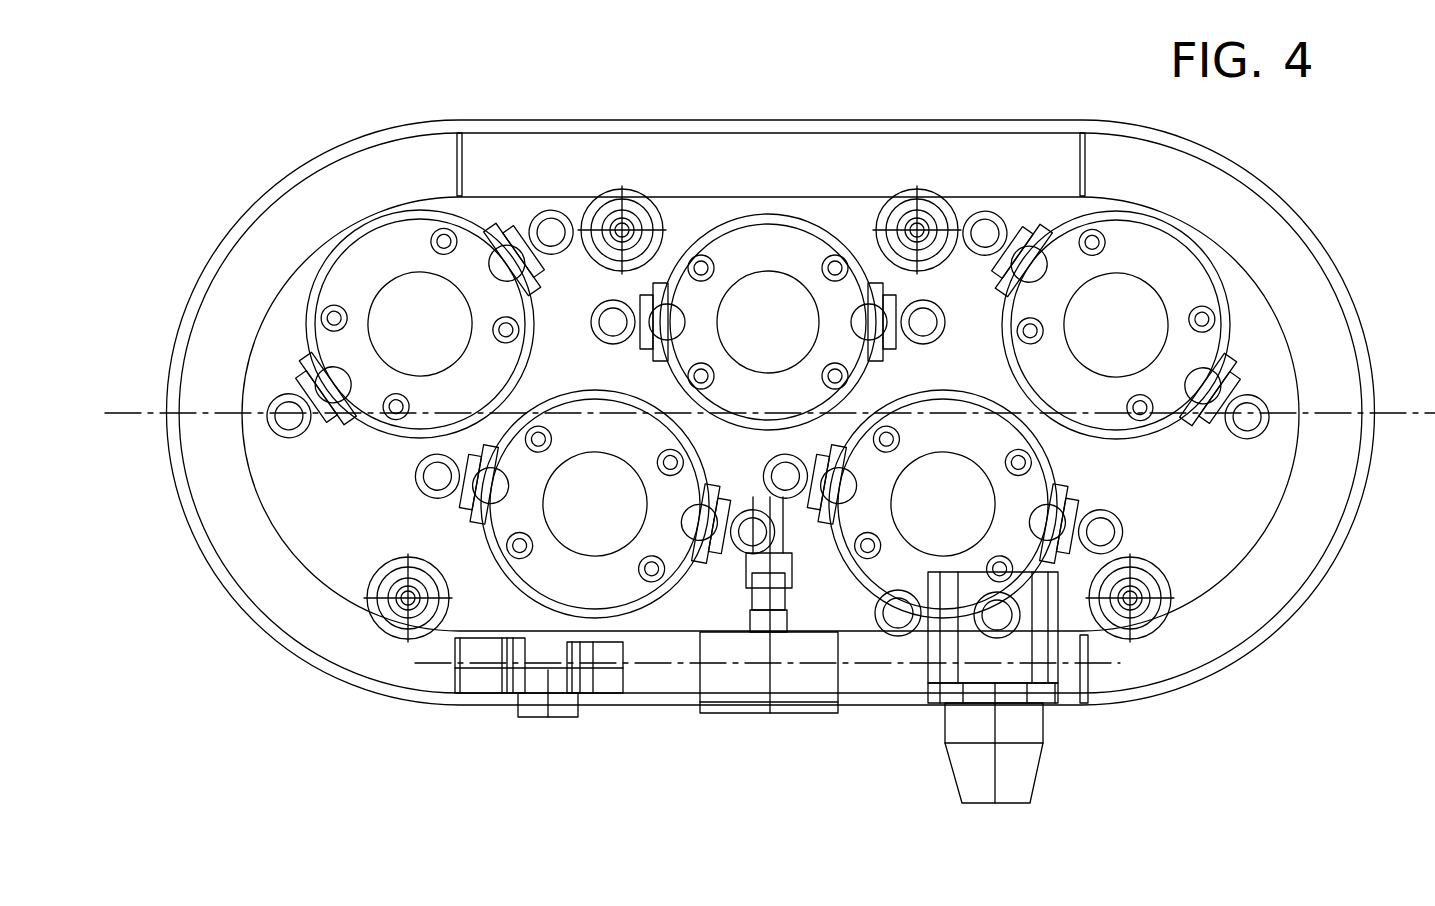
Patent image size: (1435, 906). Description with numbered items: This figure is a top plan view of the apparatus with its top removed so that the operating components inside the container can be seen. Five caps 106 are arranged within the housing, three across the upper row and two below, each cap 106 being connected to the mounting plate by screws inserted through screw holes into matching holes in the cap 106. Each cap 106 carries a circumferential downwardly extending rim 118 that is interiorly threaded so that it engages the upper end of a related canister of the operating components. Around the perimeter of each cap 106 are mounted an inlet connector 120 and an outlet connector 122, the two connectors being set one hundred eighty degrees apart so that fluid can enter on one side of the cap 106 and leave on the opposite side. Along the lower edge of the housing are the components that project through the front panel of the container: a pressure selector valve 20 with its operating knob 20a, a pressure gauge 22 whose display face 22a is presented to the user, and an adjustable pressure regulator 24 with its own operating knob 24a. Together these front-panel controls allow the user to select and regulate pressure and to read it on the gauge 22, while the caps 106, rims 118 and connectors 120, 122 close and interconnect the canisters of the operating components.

The cap 106 is at (497, 367).
The circumferential downwardly extending rim 118 is at (538, 494).
The inlet connector 120 is at (425, 467).
The outlet connector 122 is at (740, 538).
The pressure selector valve 20 is at (478, 687).
The operating knob 20a is at (535, 710).
The pressure gauge 22 is at (712, 680).
The display face 22a is at (746, 712).
The adjustable pressure regulator 24 is at (943, 670).
The operating knob 24a is at (965, 770).